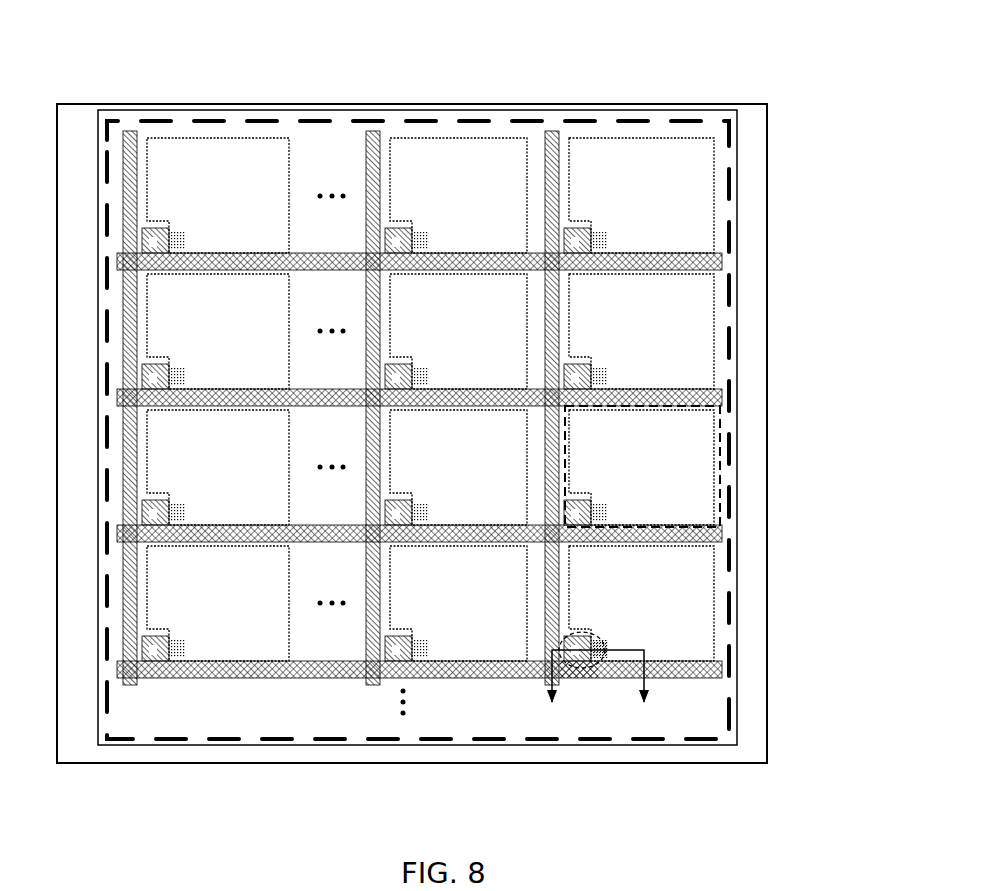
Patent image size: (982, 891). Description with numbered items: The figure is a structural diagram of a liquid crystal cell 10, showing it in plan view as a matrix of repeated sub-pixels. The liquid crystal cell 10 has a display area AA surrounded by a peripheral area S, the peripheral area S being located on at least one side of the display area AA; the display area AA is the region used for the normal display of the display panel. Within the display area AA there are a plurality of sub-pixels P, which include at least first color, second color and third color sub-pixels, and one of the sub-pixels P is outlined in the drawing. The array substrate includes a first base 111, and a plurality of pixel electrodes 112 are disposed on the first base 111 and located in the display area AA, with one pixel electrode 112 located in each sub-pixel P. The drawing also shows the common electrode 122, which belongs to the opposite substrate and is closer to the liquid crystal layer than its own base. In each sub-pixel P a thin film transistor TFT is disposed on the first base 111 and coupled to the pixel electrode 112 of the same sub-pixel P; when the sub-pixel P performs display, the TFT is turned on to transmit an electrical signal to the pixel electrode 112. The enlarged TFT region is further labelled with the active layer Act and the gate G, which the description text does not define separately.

The liquid crystal cell 10 is at (85, 47).
The peripheral area S is at (755, 120).
The first base 111 is at (767, 192).
The display area AA is at (675, 122).
The pixel electrode 112 is at (695, 330).
The common electrode 122 is at (738, 668).
The sub-pixel P is at (720, 453).
The thin film transistor TFT is at (593, 668).
The active layer Act is at (578, 653).
The gate electrode G is at (570, 662).